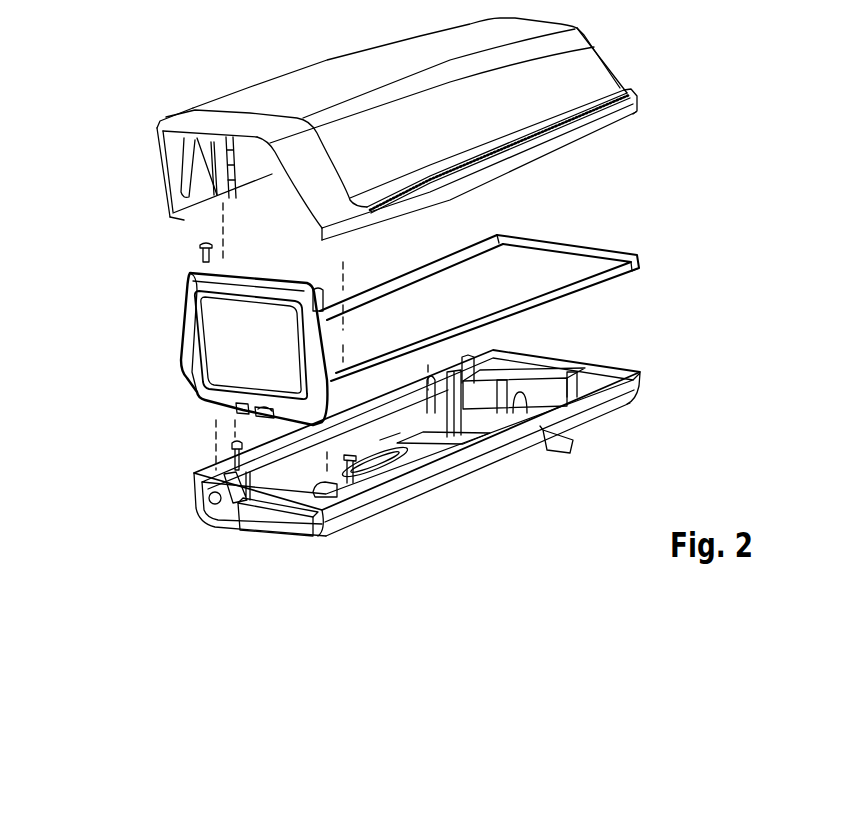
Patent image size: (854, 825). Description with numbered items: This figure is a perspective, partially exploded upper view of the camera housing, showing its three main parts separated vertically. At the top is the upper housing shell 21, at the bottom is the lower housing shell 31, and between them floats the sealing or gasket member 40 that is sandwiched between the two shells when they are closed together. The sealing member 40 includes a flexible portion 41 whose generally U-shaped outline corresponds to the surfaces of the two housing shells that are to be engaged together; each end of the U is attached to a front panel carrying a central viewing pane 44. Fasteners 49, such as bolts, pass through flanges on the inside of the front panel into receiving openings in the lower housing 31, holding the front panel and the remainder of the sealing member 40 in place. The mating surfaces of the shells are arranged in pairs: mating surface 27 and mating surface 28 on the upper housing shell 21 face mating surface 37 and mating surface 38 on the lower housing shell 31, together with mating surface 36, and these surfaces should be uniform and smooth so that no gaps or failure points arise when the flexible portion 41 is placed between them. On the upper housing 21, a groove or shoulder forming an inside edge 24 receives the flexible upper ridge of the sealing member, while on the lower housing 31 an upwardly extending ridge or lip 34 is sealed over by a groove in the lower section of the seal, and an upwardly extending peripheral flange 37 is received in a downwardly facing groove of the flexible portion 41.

The upper housing shell 21 is at (426, 190).
The groove or shoulder 24 is at (176, 183).
The mating surface 27 is at (414, 199).
The mating surface 28 is at (185, 220).
The sealing member 40 is at (555, 300).
The flexible portion 41 is at (425, 274).
The central viewing pane 44 is at (220, 334).
The fastener 49 is at (176, 270).
The mating surface 38 is at (207, 473).
The lower housing shell 31 is at (460, 461).
The ridge or lip 34 is at (263, 522).
The mating surface 36 is at (586, 352).
The peripheral flange 37 is at (480, 437).